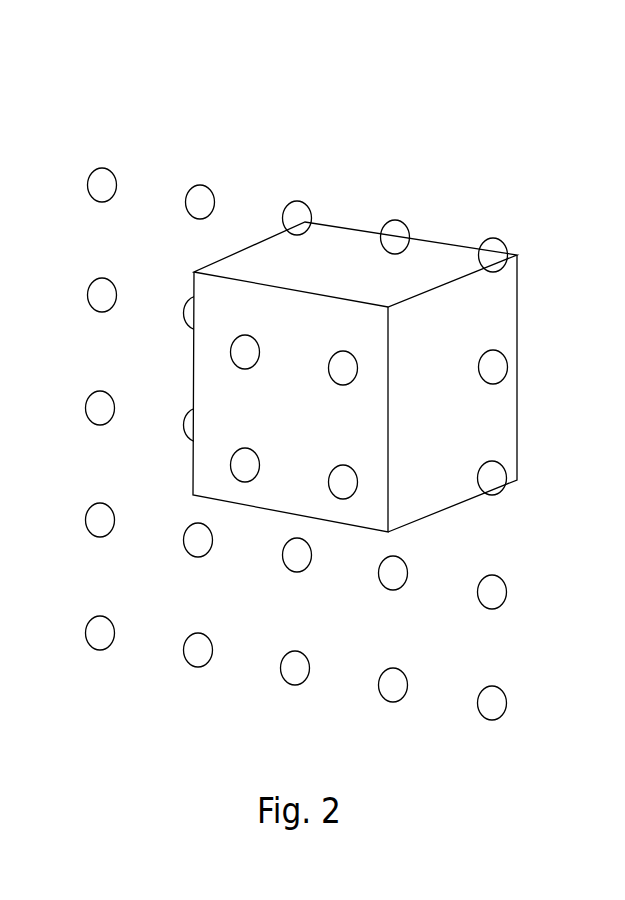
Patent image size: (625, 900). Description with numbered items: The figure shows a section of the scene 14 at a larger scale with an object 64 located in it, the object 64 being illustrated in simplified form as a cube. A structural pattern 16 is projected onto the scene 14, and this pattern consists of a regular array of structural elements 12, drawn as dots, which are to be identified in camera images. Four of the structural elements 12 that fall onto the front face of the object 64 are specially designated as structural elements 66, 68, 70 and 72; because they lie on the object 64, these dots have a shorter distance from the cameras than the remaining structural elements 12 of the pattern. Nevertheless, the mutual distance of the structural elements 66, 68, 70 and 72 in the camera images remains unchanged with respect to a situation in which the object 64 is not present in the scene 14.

The structural elements 12 is at (92, 640).
The scene 14 is at (398, 190).
The structural pattern 16 is at (198, 172).
The object 64 is at (370, 327).
The structural element 66 is at (248, 350).
The structural element 68 is at (345, 366).
The structural element 70 is at (242, 470).
The structural element 72 is at (343, 487).